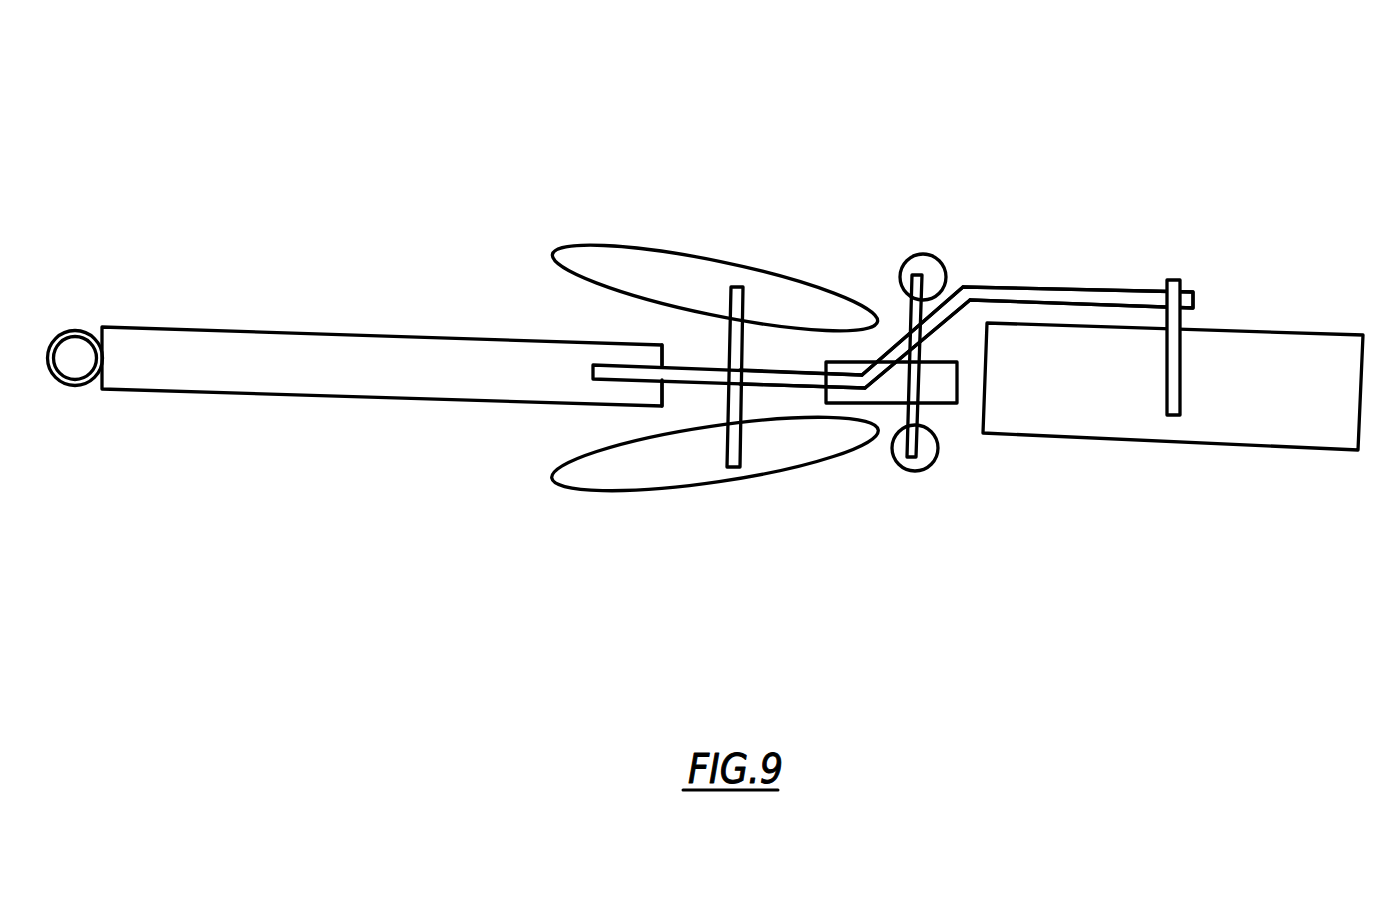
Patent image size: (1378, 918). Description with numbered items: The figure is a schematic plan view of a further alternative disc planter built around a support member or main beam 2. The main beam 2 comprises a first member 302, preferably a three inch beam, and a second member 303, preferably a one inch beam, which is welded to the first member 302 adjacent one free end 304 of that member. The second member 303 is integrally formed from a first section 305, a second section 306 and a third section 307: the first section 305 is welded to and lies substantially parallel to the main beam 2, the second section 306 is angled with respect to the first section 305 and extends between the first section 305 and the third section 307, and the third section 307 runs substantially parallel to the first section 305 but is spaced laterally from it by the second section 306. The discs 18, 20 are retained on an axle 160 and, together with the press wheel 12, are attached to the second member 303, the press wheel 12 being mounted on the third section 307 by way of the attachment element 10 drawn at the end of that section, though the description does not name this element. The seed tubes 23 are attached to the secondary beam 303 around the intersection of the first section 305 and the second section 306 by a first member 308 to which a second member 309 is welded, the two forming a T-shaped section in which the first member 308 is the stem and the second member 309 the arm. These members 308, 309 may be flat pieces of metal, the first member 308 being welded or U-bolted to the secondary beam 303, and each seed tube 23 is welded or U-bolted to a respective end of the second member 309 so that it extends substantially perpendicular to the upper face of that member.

The main beam 2 is at (355, 434).
The first member 302 is at (400, 377).
The second member 303 is at (677, 363).
The free end 304 is at (663, 395).
The first section 305 is at (773, 373).
The second section 306 is at (967, 323).
The third section 307 is at (1045, 293).
The first member 308 is at (943, 408).
The second member 309 is at (900, 420).
The axle 160 is at (760, 287).
The disc 20 is at (667, 250).
The disc 18 is at (630, 493).
The seed tube 23 is at (935, 263).
The press wheel 12 is at (1253, 332).
The stop bar 10 is at (1180, 405).